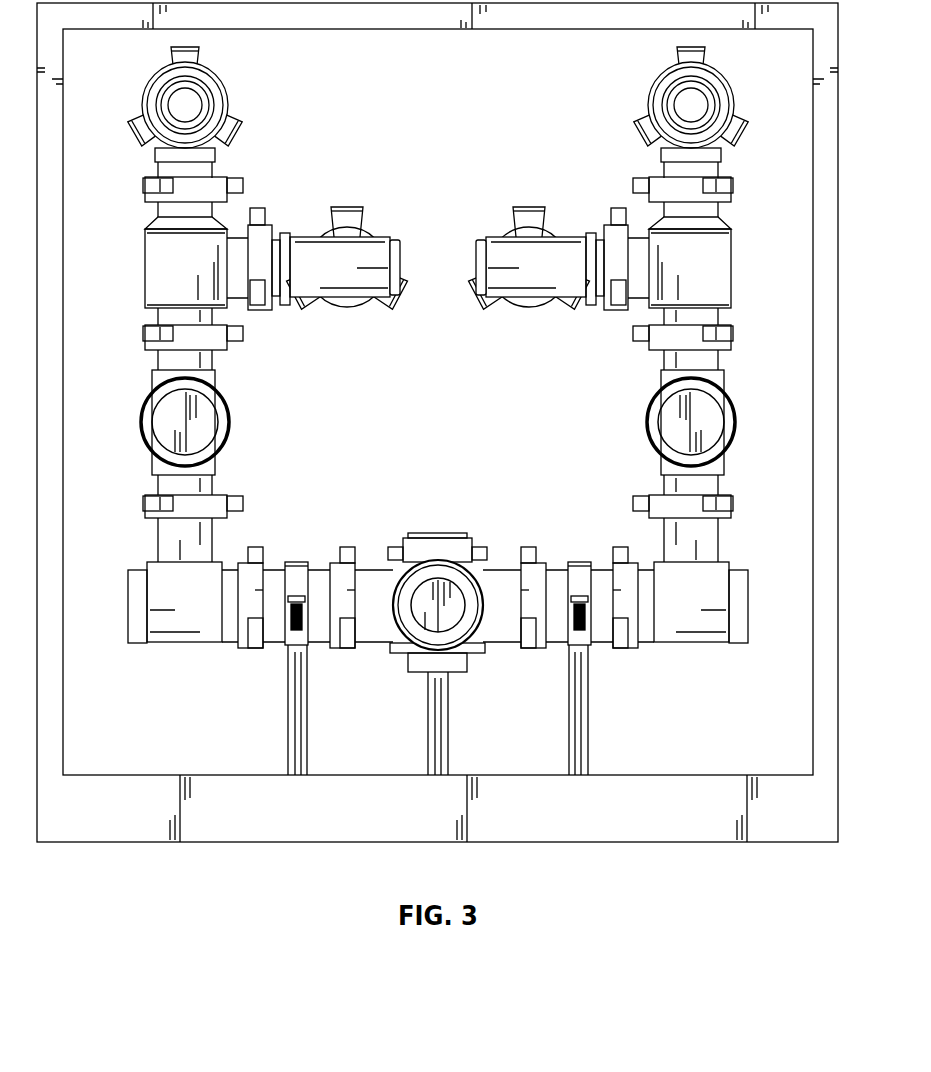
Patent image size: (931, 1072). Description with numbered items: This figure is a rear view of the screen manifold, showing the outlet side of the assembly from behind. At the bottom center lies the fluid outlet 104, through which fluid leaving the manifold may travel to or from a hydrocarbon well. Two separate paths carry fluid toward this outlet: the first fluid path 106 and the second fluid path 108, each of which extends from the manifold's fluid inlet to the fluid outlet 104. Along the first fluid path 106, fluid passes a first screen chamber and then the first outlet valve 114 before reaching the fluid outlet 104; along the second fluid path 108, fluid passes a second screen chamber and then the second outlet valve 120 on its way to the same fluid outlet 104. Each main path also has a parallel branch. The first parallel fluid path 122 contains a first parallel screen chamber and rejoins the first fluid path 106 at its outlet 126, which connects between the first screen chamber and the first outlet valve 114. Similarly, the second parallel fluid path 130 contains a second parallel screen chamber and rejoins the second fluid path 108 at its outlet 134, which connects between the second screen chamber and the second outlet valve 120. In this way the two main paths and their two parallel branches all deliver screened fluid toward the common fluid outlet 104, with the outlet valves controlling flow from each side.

The fluid outlet 104 is at (430, 587).
The first fluid path 106 is at (695, 550).
The second fluid path 108 is at (167, 540).
The first outlet valve 114 is at (710, 425).
The second outlet valve 120 is at (167, 422).
The first parallel fluid path 122 is at (586, 304).
The outlet 126 is at (642, 247).
The second parallel fluid path 130 is at (290, 304).
The outlet 134 is at (232, 243).